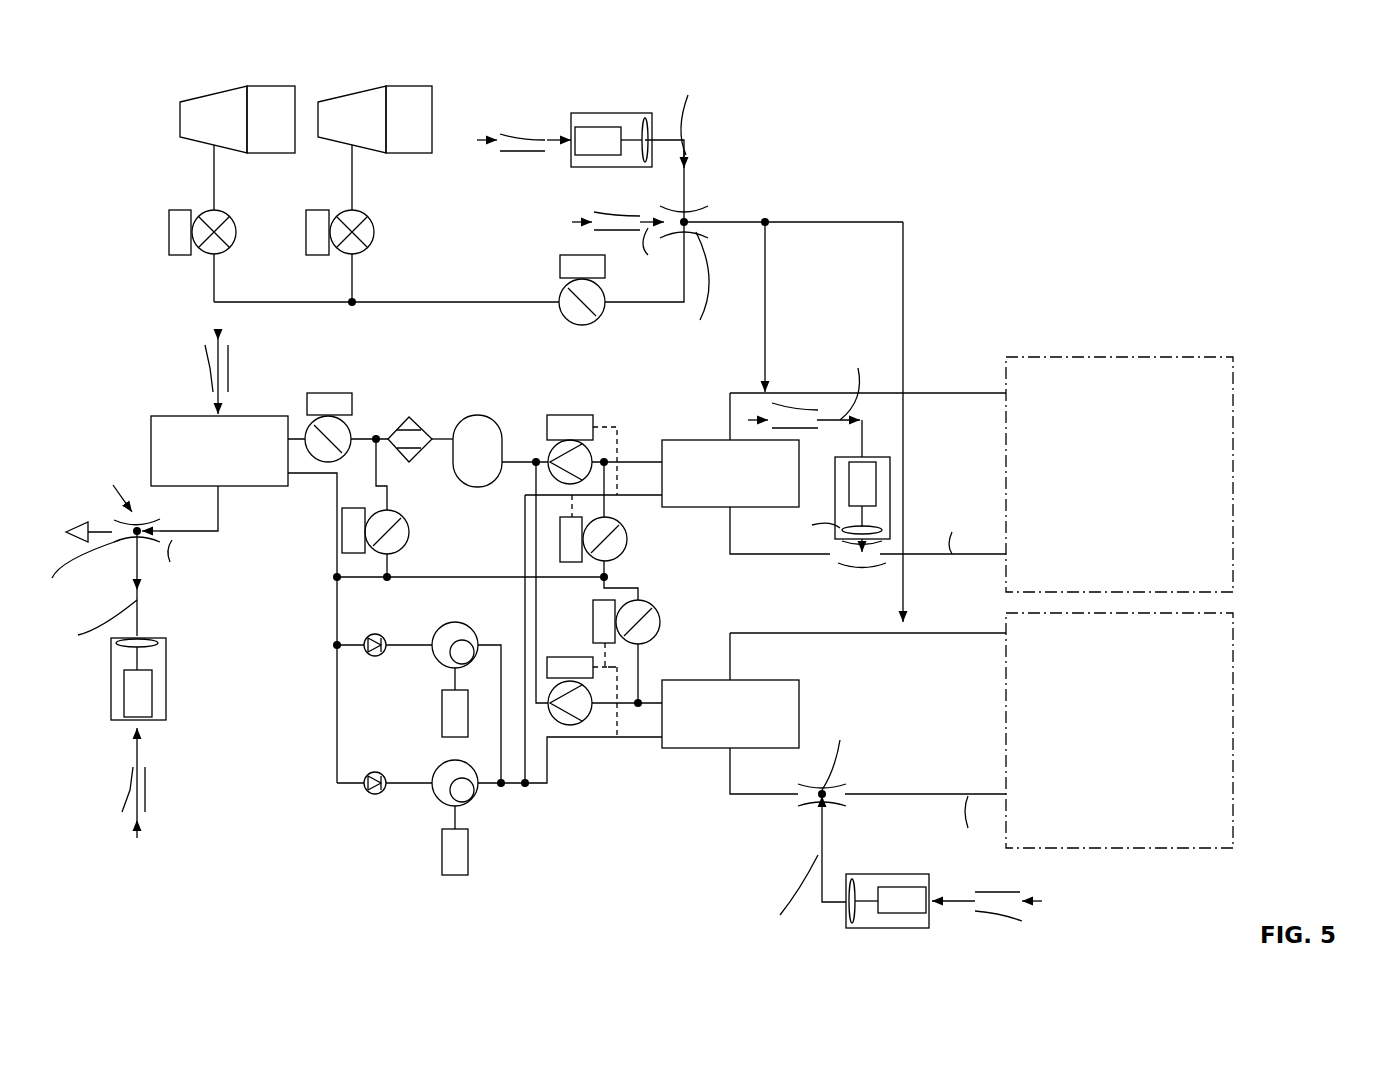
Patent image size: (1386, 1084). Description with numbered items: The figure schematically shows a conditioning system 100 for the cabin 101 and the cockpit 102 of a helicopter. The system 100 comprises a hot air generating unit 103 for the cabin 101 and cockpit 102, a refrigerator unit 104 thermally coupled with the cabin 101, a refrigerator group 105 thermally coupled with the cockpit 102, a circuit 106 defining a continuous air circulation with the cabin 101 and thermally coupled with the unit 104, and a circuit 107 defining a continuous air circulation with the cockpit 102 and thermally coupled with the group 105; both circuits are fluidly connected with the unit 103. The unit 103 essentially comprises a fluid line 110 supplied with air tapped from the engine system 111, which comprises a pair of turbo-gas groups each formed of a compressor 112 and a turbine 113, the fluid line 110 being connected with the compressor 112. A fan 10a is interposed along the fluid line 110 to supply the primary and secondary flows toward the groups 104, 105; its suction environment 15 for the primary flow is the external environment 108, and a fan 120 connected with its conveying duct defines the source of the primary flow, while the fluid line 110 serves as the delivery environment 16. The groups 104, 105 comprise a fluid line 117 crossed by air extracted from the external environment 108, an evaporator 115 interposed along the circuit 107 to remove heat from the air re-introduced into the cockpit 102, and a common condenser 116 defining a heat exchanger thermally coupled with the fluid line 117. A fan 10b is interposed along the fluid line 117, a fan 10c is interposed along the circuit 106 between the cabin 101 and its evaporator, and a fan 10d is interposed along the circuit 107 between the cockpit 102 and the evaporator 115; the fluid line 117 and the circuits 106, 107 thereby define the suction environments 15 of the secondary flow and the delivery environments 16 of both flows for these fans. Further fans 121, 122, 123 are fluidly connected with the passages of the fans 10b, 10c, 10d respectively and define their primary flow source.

The conditioning system 100 is at (507, 108).
The hot air generating unit 103 is at (90, 150).
The engine system 111 is at (210, 68).
The compressor 112 is at (190, 135).
The turbine 113 is at (283, 94).
The external environment 108 is at (516, 224).
The fan 120 is at (608, 113).
The fan 10a is at (697, 192).
The delivery environment 16 is at (722, 210).
The fluid line 110 is at (852, 220).
The refrigerator unit 104 is at (930, 350).
The circuit 106 is at (980, 398).
The fan 122 is at (882, 485).
The fan 10c is at (855, 572).
The suction environment 15 is at (893, 566).
The refrigerator group 105 is at (737, 800).
The circuit 107 is at (960, 636).
The evaporator 115 is at (668, 748).
The fan 10d is at (836, 810).
The fan 123 is at (920, 922).
The cabin 101 is at (1240, 415).
The cockpit 102 is at (1240, 672).
The common condenser 116 is at (162, 425).
The fluid line 117 is at (222, 505).
The fan 10b is at (128, 460).
The fan 121 is at (160, 690).